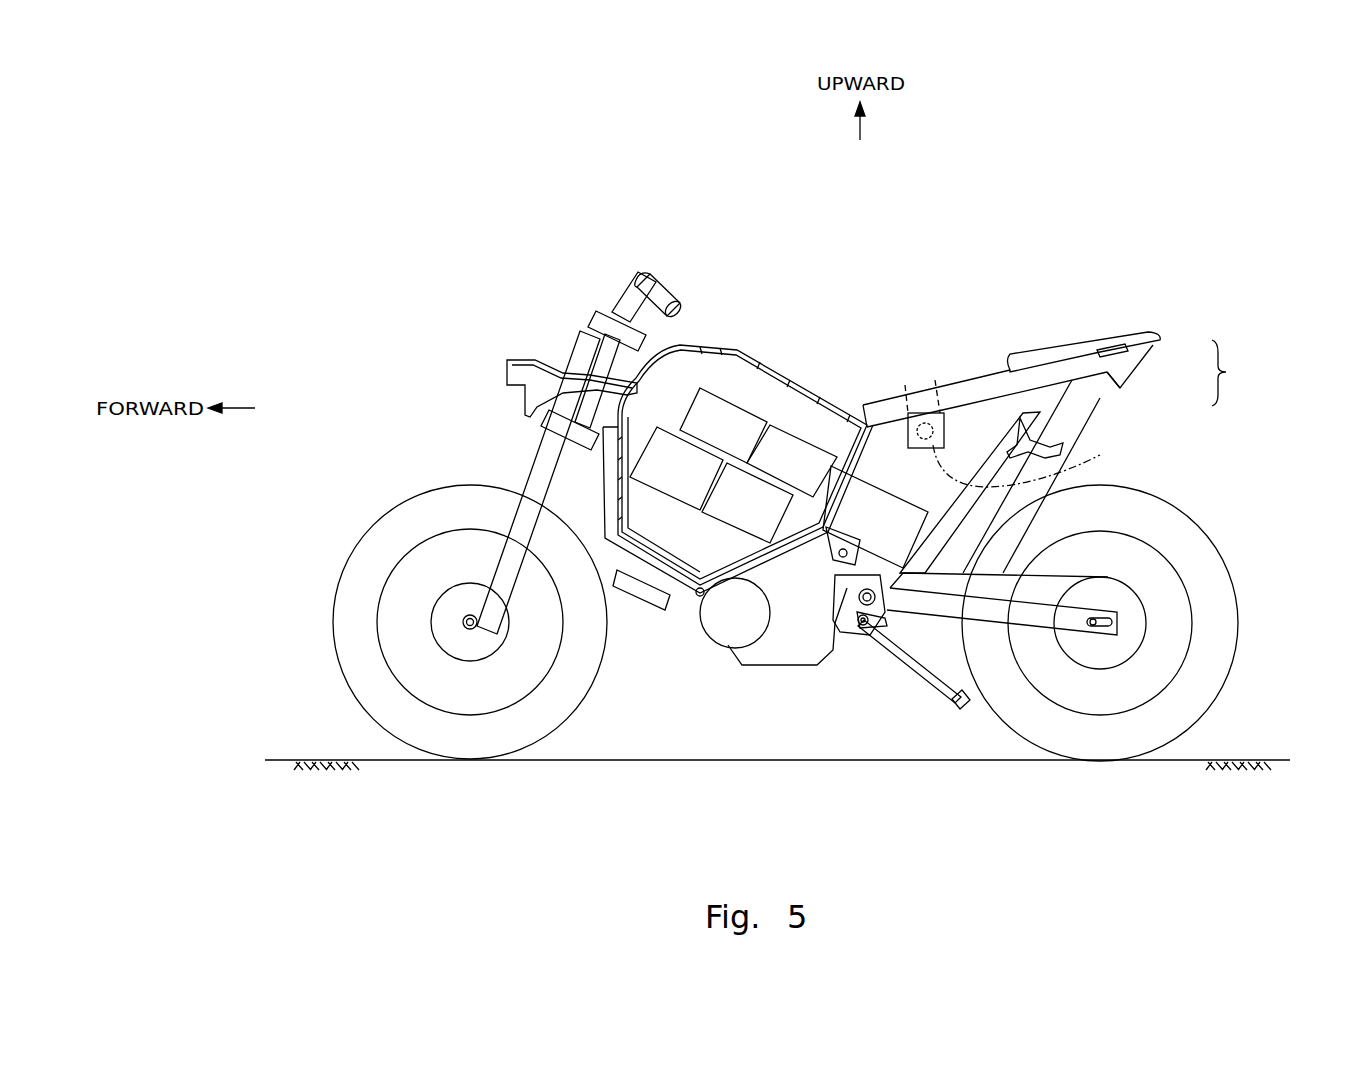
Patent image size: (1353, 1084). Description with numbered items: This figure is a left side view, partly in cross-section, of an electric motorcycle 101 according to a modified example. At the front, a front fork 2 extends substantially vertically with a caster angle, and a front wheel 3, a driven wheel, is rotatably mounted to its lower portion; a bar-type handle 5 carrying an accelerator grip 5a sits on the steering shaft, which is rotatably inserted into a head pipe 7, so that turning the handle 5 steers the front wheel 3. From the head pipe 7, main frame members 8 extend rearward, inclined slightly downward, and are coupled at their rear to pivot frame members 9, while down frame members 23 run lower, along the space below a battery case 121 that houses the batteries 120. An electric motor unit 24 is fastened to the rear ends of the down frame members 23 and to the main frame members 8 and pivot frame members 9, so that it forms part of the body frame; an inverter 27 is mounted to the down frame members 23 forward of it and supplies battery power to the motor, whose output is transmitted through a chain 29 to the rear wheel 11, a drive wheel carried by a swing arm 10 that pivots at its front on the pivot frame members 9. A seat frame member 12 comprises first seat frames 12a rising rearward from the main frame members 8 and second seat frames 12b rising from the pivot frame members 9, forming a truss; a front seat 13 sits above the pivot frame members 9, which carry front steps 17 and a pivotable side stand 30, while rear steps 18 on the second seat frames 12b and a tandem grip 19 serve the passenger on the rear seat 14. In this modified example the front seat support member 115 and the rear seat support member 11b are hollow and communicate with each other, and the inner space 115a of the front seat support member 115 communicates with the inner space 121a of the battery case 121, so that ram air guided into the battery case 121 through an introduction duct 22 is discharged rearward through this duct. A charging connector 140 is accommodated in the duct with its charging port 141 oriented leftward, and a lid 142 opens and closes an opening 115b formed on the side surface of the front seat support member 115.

The electric motorcycle 101 is at (438, 272).
The front fork 2 is at (527, 477).
The front wheel 3 is at (355, 557).
The bar-type handle 5 is at (648, 267).
The accelerator grip 5a is at (670, 285).
The head pipe 7 is at (585, 330).
The introduction duct 22 is at (530, 358).
The down frame members 23 is at (615, 592).
The battery case 121 is at (705, 368).
The inner space of battery case 121a is at (678, 380).
The batteries 120 is at (802, 457).
The front seat support member 115 is at (826, 398).
The inner space of front seat support member 115a is at (862, 404).
The opening 115b is at (958, 380).
The charging connector 140 is at (908, 412).
The lid 142 is at (930, 412).
The charging port 141 is at (1100, 455).
The front seat 13 is at (990, 370).
The rear seat 14 is at (1040, 340).
The rear seat support member 11b is at (1063, 364).
The tandem grip 19 is at (1110, 338).
The first seat frames 12a is at (1083, 367).
The second seat frames 12b is at (1090, 420).
The seat frame member 12 is at (1235, 373).
The rear steps 18 is at (1040, 428).
The rear wheel 11 is at (1210, 538).
The inverter 27 is at (645, 606).
The electric motor unit 24 is at (765, 685).
The main frame members 8 is at (805, 562).
The pivot frame members 9 is at (836, 570).
The front steps 17 is at (857, 606).
The swing arm 10 is at (905, 600).
The chain 29 is at (928, 666).
The side stand 30 is at (866, 628).